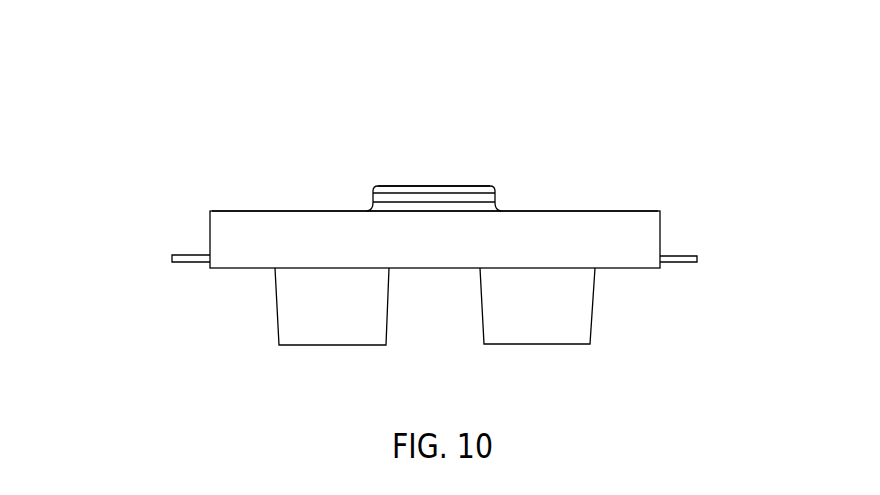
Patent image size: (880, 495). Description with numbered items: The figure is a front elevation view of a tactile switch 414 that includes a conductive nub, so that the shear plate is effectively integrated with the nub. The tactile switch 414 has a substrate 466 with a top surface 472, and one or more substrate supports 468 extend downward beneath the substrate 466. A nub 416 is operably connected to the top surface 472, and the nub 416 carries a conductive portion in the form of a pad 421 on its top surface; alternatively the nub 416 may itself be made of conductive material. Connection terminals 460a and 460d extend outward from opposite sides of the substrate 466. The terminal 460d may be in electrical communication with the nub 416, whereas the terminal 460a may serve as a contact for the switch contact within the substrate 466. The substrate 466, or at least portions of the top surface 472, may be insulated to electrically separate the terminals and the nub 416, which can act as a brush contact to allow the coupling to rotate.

The tactile switch 414 is at (652, 123).
The nub 416 is at (470, 200).
The pad 421 is at (428, 183).
The substrate 466 is at (647, 228).
The substrate supports 468 is at (340, 325).
The top surface 472 is at (303, 211).
The connection terminal 460a is at (697, 258).
The connection terminal 460d is at (168, 257).